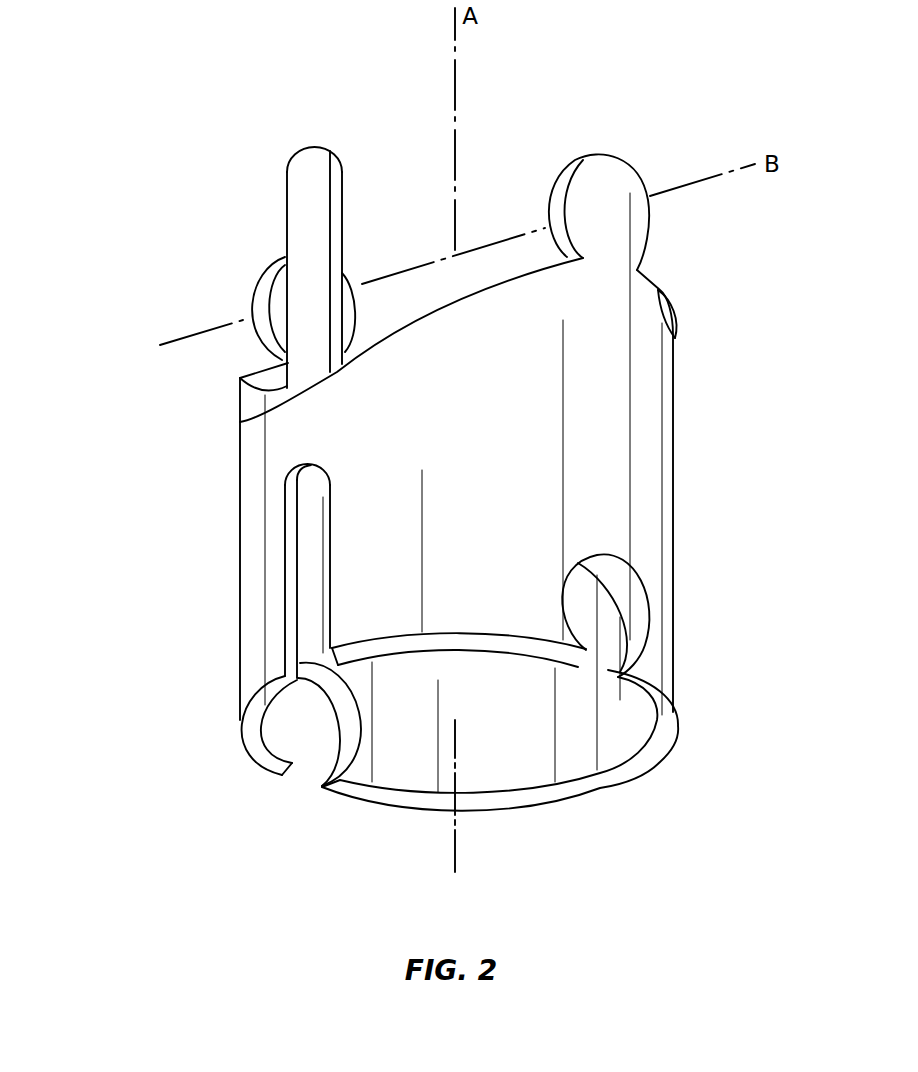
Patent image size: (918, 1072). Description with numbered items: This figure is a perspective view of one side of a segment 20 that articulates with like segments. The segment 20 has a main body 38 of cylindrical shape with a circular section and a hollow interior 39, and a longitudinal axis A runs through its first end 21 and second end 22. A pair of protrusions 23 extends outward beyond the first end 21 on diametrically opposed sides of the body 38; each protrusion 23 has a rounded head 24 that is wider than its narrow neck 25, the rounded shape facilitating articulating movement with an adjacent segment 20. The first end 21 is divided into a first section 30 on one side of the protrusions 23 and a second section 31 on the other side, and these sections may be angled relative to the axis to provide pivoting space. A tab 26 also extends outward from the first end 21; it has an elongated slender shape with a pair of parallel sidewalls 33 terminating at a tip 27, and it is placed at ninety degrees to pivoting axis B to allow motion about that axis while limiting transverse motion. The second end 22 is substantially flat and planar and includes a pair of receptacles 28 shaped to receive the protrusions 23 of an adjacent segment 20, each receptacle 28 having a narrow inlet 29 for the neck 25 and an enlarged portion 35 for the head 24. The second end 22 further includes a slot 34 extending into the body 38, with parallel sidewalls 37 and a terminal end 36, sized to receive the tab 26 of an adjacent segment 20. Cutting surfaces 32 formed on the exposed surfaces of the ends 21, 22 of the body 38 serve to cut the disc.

The segment 20 is at (198, 521).
The first end 21 is at (660, 290).
The second end 22 is at (652, 753).
The protrusions 23 is at (257, 277).
The head 24 is at (283, 273).
The neck 25 is at (280, 356).
The tab 26 is at (304, 240).
The tip 27 is at (323, 147).
The receptacles 28 is at (308, 742).
The narrow inlet 29 is at (309, 784).
The first section 30 is at (240, 422).
The second section 31 is at (677, 324).
The cutting surfaces 32 is at (480, 297).
The parallel sidewalls 33 is at (290, 224).
The slot 34 is at (281, 571).
The enlarged portion 35 is at (300, 707).
The terminal end 36 is at (308, 467).
The parallel sidewalls 37 is at (293, 570).
The main body 38 is at (652, 470).
The hollow interior 39 is at (532, 757).